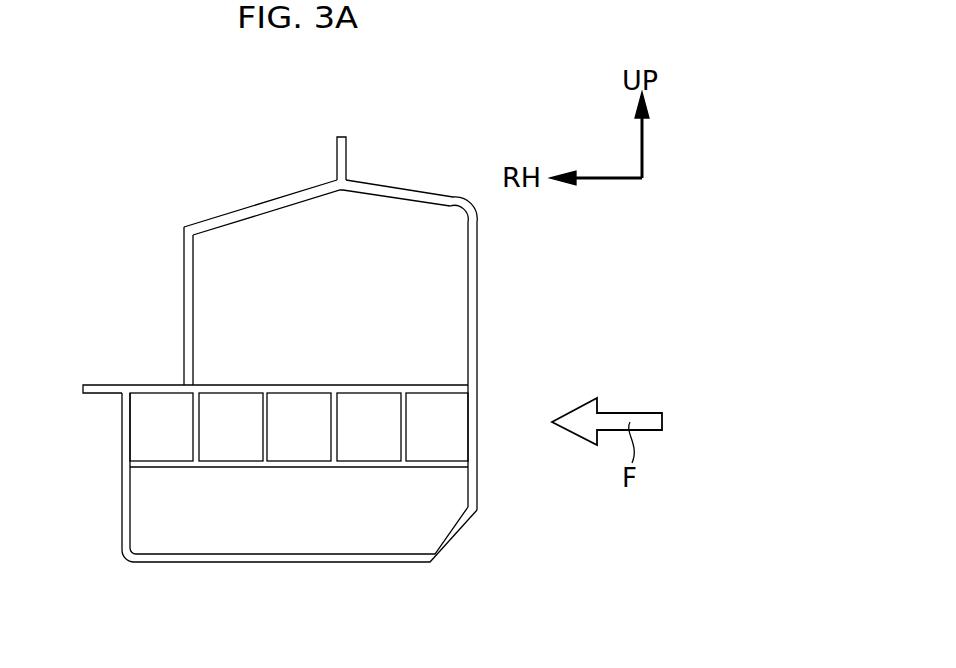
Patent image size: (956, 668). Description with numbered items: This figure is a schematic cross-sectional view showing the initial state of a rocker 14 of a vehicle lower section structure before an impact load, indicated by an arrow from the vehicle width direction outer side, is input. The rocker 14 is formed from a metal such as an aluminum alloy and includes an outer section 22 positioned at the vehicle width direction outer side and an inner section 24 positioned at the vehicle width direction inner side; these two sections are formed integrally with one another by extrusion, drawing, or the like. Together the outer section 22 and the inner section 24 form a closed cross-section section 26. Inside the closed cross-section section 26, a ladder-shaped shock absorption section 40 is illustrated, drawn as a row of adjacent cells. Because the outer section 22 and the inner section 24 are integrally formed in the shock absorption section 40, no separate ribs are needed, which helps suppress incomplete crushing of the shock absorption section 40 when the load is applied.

The rocker 14 is at (503, 290).
The outer section 22 is at (478, 330).
The inner section 24 is at (180, 310).
The closed cross-section section 26 is at (360, 513).
The shock absorption section 40 is at (272, 468).